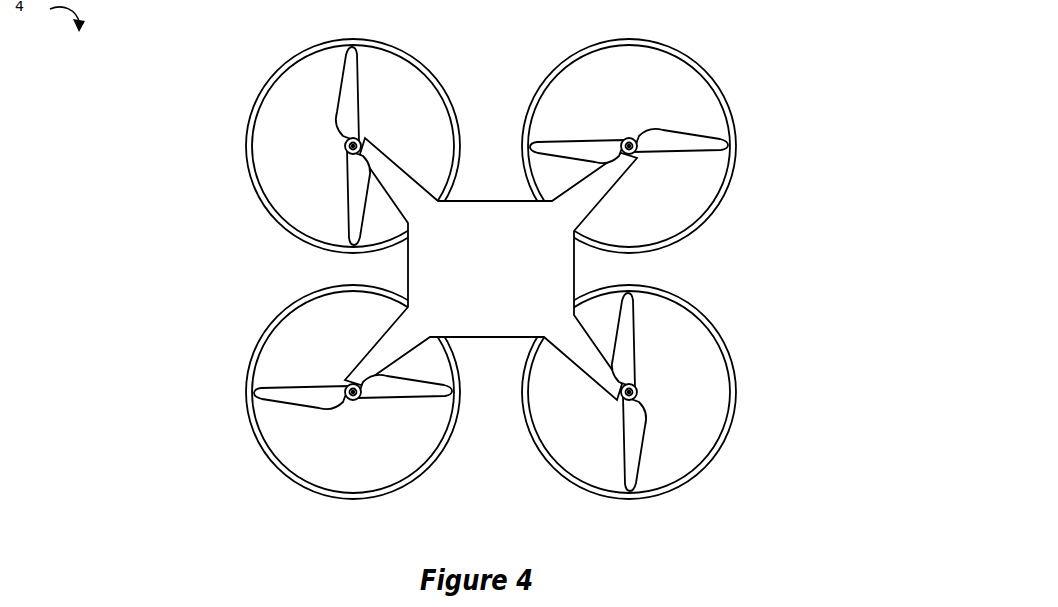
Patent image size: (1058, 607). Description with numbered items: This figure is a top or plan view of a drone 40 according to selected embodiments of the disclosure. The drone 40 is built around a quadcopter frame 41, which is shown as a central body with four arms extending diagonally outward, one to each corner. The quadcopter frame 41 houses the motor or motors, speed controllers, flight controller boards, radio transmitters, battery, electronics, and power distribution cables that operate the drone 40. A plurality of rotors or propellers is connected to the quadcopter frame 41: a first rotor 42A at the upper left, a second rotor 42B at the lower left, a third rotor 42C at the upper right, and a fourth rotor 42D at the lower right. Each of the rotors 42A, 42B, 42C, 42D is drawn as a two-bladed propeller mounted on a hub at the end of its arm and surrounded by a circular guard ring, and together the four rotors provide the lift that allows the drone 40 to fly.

The drone 40 is at (491, 269).
The quadcopter frame 41 is at (408, 273).
The rotor 42A is at (348, 60).
The rotor 42B is at (247, 388).
The rotor 42C is at (713, 143).
The rotor 42D is at (633, 470).